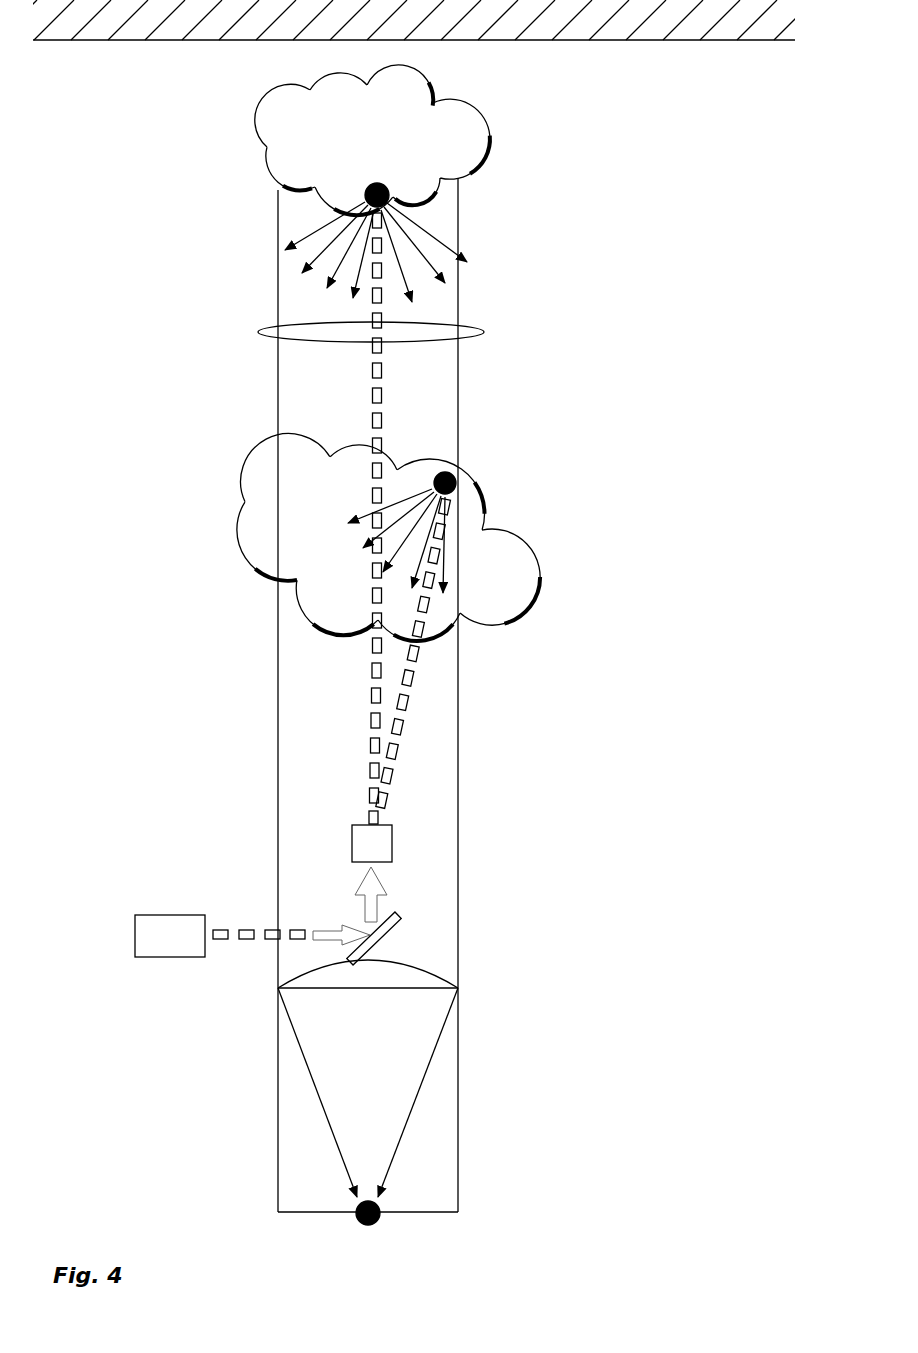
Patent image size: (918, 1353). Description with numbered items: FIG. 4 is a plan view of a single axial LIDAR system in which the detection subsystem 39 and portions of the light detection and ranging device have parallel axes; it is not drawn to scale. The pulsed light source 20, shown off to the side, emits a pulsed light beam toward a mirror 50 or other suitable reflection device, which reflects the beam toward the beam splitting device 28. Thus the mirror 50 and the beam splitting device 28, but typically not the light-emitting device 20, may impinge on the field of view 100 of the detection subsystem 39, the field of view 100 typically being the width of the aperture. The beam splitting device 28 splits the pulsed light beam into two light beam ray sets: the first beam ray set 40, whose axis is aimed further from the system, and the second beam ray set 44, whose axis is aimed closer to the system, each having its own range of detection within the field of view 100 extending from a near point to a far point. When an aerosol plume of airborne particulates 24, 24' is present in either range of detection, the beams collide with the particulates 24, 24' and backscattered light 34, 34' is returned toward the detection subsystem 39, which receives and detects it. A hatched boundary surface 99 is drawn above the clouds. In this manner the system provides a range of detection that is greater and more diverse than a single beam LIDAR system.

The ceiling / boundary surface 99 is at (461, 13).
The airborne particulates 24 is at (372, 140).
The backscattered beam 34 is at (403, 242).
The field of view 100 is at (483, 332).
The first light beam ray set 40 is at (388, 531).
The airborne particulates 24' is at (388, 537).
The backscattered beam 34' is at (468, 532).
The second light beam ray set 44 is at (417, 677).
The beam splitting device 28 is at (385, 843).
The mirror 50 is at (400, 920).
The pulsed light source 20 is at (135, 937).
The light detection subsystem 39 is at (378, 1056).